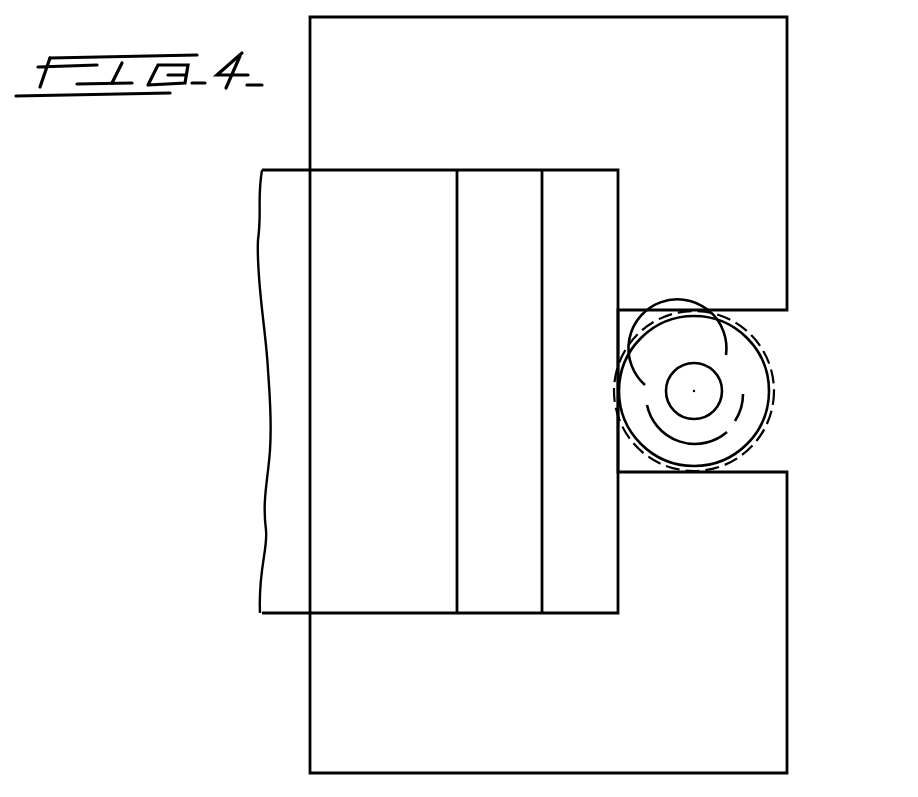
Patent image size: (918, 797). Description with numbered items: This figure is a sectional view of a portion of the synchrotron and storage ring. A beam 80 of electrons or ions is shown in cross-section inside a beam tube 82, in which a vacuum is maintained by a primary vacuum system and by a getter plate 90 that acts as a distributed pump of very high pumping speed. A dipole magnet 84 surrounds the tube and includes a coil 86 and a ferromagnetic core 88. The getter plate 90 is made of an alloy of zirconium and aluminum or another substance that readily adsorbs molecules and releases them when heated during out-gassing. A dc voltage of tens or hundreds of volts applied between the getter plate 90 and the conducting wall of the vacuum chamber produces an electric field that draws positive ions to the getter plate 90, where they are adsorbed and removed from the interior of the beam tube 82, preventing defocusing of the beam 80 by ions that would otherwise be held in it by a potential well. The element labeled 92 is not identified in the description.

The beam 80 is at (722, 390).
The beam tube 82 is at (775, 395).
The dipole magnet 84 is at (548, 112).
The coil 86 is at (286, 615).
The ferromagnetic core 88 is at (787, 115).
The getter plate 90 is at (726, 355).
The lower rib 92 is at (727, 432).